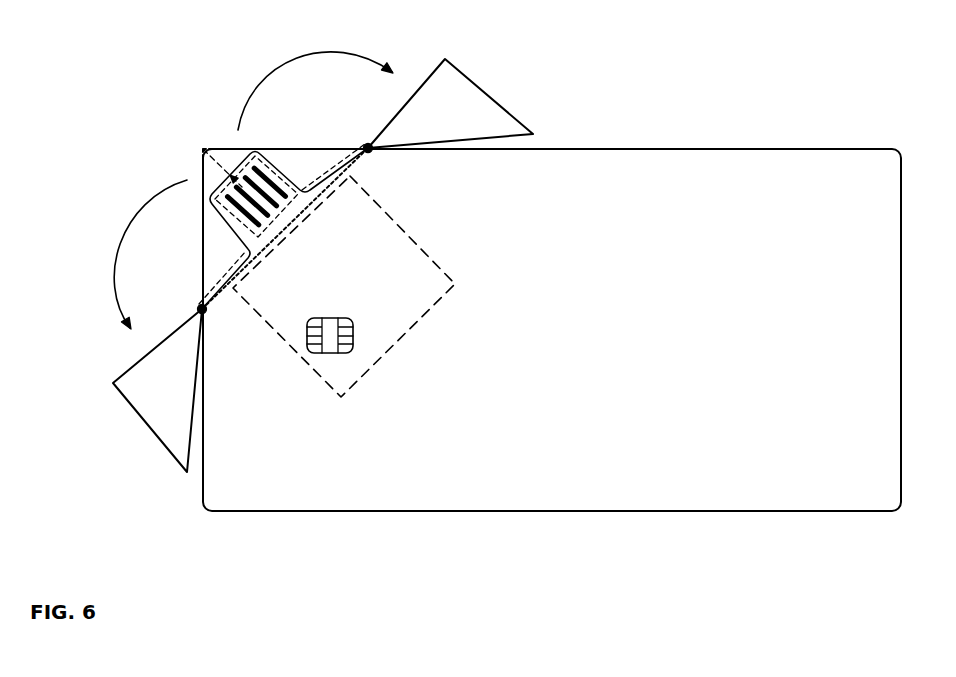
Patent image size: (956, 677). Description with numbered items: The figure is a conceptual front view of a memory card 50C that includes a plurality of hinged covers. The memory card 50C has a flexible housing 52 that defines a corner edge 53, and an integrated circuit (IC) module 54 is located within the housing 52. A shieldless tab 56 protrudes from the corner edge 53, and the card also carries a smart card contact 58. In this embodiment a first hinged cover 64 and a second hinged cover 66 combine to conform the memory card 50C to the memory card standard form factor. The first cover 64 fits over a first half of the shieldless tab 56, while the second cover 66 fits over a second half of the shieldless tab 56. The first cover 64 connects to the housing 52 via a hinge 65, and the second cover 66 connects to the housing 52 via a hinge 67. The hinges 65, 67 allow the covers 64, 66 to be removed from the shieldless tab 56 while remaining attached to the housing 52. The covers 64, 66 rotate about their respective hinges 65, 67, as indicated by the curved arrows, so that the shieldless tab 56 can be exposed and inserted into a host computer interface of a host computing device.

The memory card 50C is at (559, 290).
The flexible housing 52 is at (657, 165).
The corner edge 53 is at (348, 169).
The integrated circuit (IC) module 54 is at (410, 284).
The shieldless tab 56 is at (237, 144).
The smart card contact 58 is at (296, 335).
The first hinged cover 64 is at (168, 423).
The hinge 65 is at (196, 308).
The second hinged cover 66 is at (478, 118).
The hinge 67 is at (366, 136).